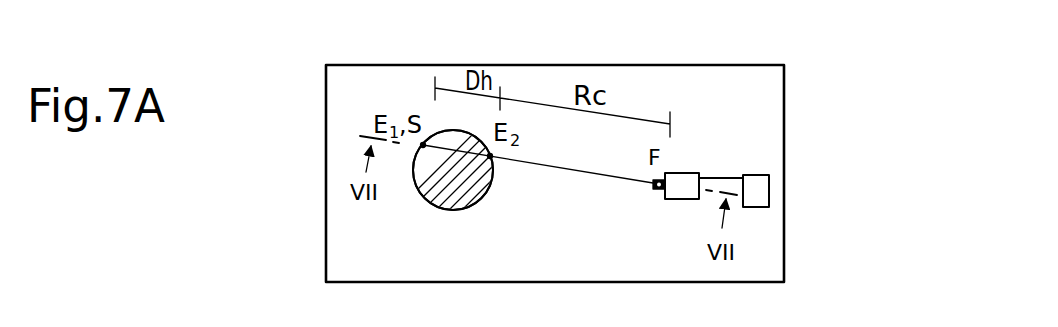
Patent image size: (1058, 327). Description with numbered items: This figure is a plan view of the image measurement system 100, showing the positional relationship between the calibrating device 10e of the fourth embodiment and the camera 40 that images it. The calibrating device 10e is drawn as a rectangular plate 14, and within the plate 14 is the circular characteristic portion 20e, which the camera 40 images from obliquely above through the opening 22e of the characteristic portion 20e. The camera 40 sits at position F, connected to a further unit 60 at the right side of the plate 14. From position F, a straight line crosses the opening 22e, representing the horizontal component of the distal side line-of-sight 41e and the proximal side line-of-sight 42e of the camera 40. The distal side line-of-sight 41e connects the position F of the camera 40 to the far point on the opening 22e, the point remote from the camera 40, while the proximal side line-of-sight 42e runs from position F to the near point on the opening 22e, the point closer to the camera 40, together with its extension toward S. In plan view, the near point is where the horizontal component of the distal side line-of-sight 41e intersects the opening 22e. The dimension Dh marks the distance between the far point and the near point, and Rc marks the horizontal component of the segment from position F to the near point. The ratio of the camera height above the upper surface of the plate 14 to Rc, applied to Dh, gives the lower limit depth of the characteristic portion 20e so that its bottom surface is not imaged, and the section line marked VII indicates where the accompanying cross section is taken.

The calibrating device 10e is at (520, 62).
The image measurement system 100 is at (807, 93).
The plate 14 is at (765, 117).
The characteristic portion 20e is at (452, 208).
The opening 22e is at (487, 195).
The camera 40 is at (681, 172).
The control unit 60 is at (751, 175).
The distal side line-of-sight 41e is at (547, 193).
The proximal side line-of-sight 42e is at (587, 178).